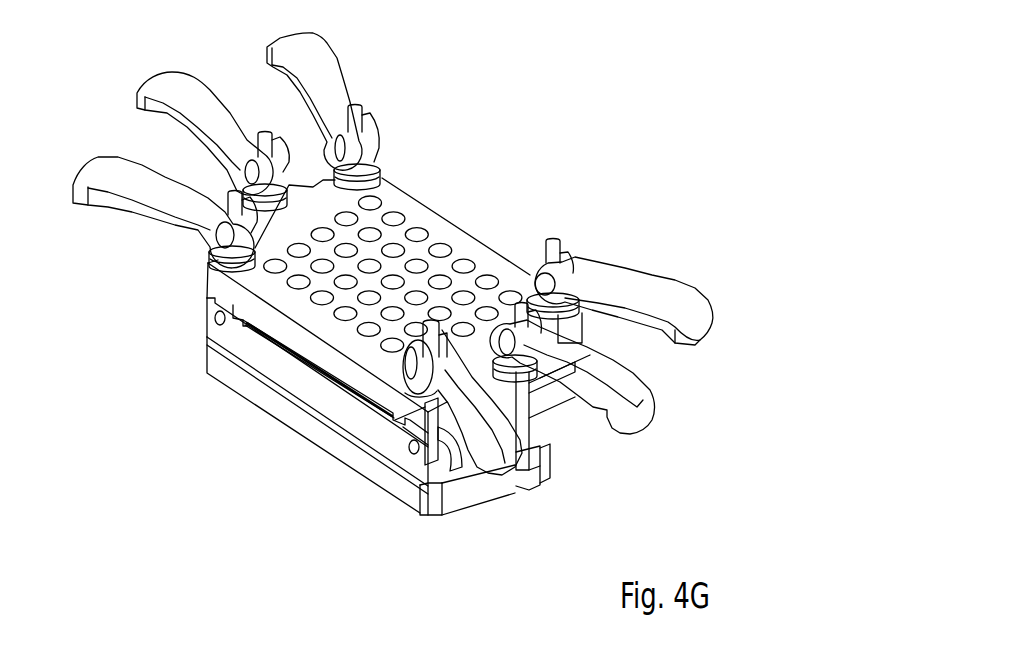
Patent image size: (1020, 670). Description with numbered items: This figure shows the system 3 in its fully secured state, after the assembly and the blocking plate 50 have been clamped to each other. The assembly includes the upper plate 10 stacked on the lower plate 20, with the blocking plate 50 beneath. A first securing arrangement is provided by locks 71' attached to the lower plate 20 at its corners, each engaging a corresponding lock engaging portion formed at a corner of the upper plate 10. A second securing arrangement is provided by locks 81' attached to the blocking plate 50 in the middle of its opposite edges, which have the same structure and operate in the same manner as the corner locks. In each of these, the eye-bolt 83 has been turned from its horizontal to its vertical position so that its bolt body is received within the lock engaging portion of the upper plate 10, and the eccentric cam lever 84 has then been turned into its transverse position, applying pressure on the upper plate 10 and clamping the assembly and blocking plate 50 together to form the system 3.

The system 3 is at (607, 155).
The upper plate 10 is at (220, 285).
The lower plate 20 is at (215, 327).
The blocking plate 50 is at (252, 392).
The lock 71' is at (345, 103).
The lock 81' is at (213, 105).
The eye-bolt 83 is at (533, 388).
The eccentric cam lever 84 is at (643, 397).